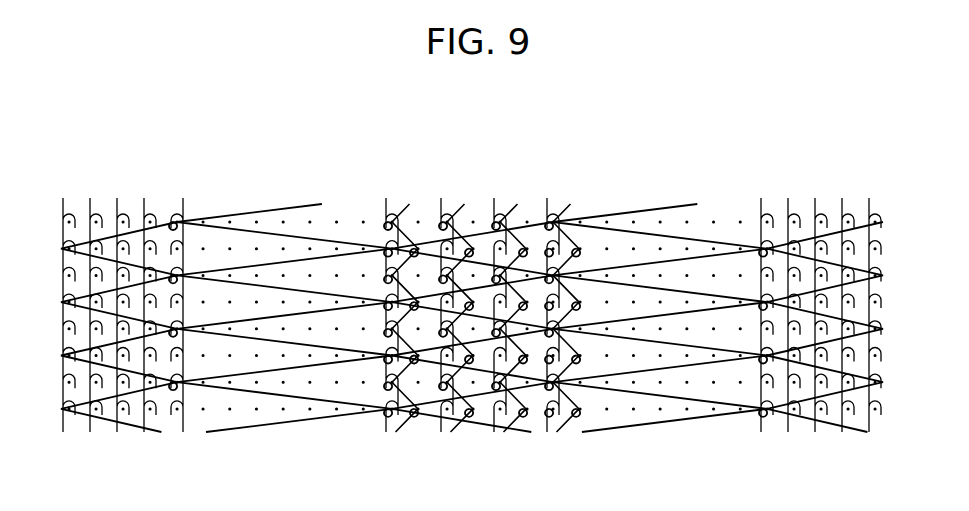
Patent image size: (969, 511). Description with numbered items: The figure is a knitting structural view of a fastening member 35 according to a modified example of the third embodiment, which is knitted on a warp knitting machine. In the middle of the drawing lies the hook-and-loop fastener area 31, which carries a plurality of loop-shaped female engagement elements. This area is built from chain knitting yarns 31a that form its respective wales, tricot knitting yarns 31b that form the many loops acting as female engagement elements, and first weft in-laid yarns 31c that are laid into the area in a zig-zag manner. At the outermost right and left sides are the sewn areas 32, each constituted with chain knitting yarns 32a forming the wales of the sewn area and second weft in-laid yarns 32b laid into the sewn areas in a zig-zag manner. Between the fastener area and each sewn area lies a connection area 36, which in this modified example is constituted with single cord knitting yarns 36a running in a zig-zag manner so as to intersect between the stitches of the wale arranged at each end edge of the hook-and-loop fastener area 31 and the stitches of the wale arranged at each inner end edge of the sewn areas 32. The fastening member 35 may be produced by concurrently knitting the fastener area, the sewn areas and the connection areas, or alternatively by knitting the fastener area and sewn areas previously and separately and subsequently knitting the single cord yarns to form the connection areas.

The fastening member 35 is at (146, 141).
The sewn areas 32 is at (888, 451).
The chain knitting yarns 32a is at (174, 214).
The second weft in-laid yarns 32b is at (110, 230).
The connection areas 36 is at (765, 451).
The single cord knitting yarns 36a is at (297, 207).
The hook-and-loop fastener area 31 is at (388, 451).
The chain knitting yarns 31a is at (385, 208).
The tricot knitting yarns 31b is at (416, 212).
The first weft in-laid yarns 31c is at (484, 210).